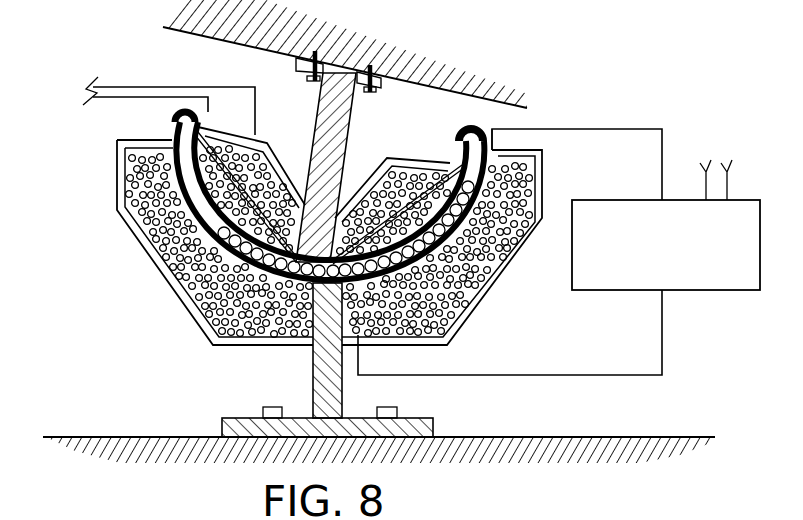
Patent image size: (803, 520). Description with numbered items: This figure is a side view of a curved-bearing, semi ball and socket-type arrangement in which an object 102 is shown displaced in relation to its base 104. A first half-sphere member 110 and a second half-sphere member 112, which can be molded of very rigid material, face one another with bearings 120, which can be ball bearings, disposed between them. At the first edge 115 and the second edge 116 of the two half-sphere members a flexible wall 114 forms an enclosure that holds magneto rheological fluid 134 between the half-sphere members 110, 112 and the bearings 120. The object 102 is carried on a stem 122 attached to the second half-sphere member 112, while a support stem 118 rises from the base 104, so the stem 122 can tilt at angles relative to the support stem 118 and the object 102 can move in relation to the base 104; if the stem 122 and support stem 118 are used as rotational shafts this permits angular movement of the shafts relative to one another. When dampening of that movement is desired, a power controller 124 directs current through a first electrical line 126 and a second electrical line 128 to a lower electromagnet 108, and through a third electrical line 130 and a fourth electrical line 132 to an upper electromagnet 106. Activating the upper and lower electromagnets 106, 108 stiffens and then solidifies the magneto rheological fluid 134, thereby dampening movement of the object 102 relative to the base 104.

The object 102 is at (445, 58).
The base 104 is at (528, 437).
The upper electromagnet 106 is at (405, 162).
The lower electromagnet 108 is at (180, 290).
The first half-sphere member 110 is at (128, 227).
The second half-sphere member 112 is at (255, 145).
The flexible wall 114 is at (173, 128).
The first edge 115 is at (543, 152).
The second edge 116 is at (456, 160).
The support stem 118 is at (313, 382).
The bearings 120 is at (162, 255).
The stem 122 is at (338, 116).
The power controller 124 is at (646, 203).
The first electrical line 126 is at (595, 127).
The second electrical line 128 is at (462, 375).
The third electrical line 130 is at (127, 86).
The fourth electrical line 132 is at (110, 97).
The magneto rheological fluid 134 is at (157, 171).